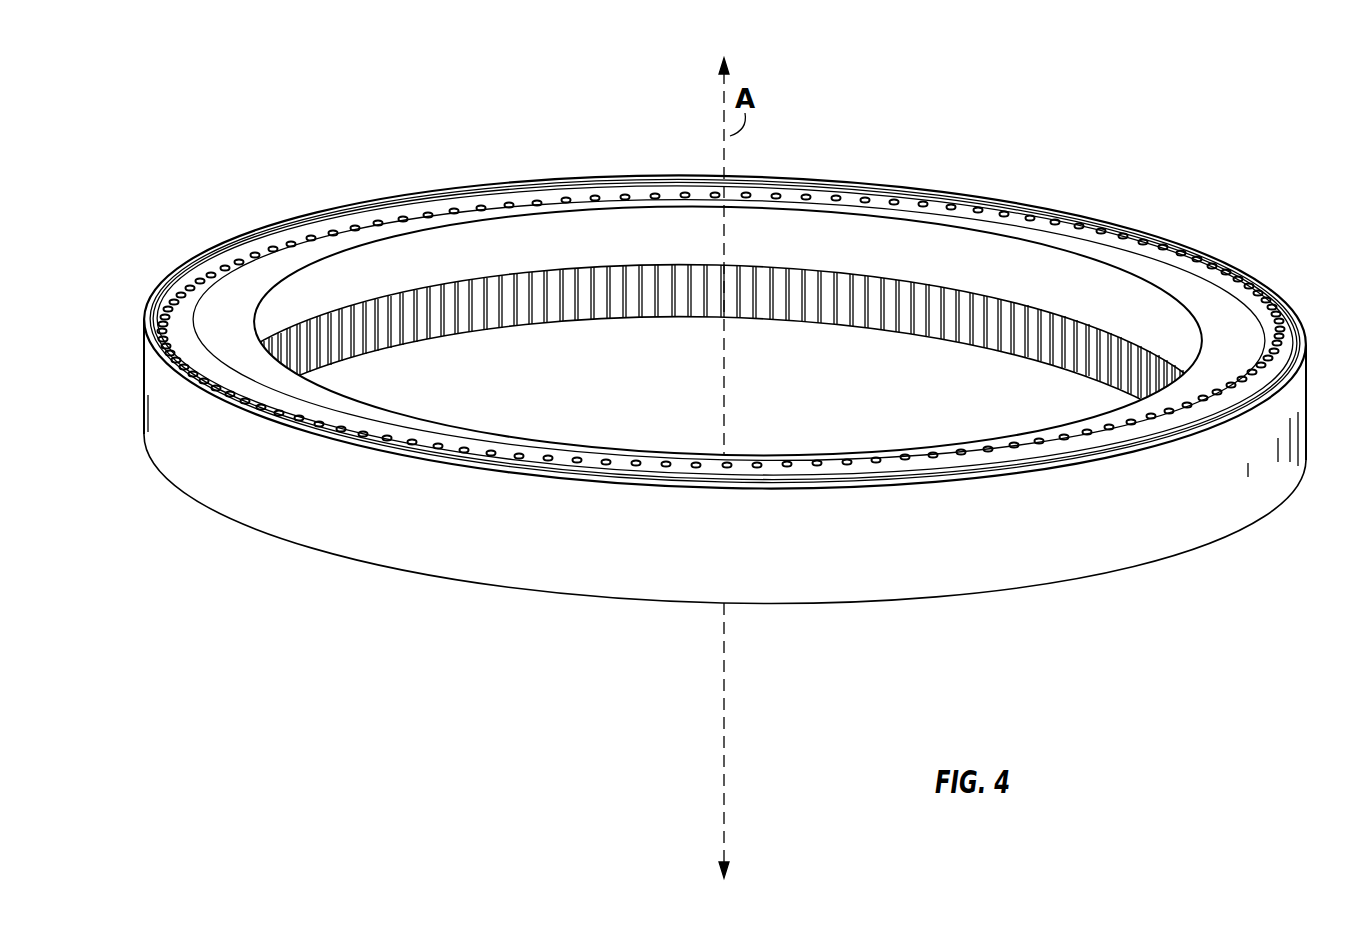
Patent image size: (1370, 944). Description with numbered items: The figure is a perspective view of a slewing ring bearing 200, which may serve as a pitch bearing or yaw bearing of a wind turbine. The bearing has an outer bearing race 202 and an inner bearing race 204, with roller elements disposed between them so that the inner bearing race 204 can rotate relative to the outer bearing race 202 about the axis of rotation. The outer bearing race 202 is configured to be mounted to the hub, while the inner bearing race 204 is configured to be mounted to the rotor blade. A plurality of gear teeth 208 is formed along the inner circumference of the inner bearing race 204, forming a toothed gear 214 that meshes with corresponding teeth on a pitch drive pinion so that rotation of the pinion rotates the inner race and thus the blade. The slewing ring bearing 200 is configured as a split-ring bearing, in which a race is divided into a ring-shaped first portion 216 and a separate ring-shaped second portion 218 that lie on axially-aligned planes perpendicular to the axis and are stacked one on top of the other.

The slewing ring bearing 200 is at (751, 361).
The outer bearing race 202 is at (1296, 432).
The inner bearing race 204 is at (1218, 300).
The first portion 216 is at (517, 240).
The gear teeth 208 is at (716, 361).
The toothed gear 214 is at (713, 487).
The second portion 218 is at (713, 435).